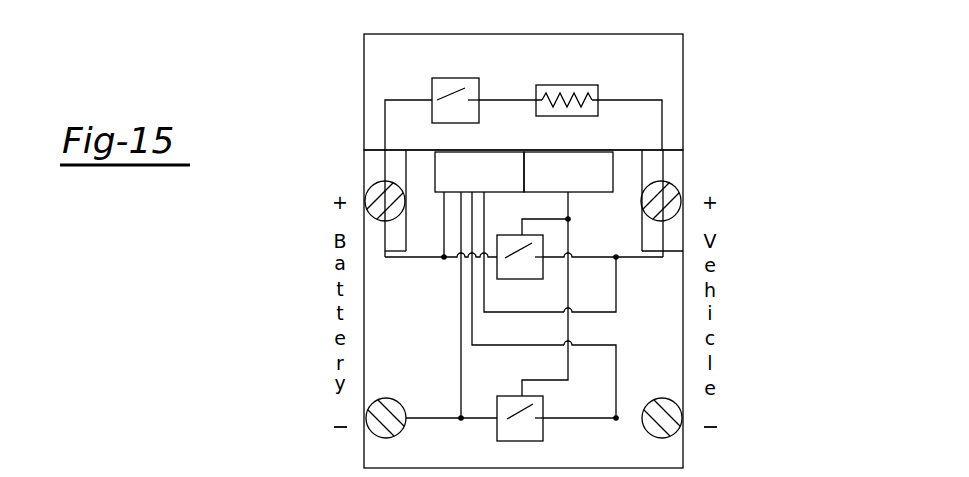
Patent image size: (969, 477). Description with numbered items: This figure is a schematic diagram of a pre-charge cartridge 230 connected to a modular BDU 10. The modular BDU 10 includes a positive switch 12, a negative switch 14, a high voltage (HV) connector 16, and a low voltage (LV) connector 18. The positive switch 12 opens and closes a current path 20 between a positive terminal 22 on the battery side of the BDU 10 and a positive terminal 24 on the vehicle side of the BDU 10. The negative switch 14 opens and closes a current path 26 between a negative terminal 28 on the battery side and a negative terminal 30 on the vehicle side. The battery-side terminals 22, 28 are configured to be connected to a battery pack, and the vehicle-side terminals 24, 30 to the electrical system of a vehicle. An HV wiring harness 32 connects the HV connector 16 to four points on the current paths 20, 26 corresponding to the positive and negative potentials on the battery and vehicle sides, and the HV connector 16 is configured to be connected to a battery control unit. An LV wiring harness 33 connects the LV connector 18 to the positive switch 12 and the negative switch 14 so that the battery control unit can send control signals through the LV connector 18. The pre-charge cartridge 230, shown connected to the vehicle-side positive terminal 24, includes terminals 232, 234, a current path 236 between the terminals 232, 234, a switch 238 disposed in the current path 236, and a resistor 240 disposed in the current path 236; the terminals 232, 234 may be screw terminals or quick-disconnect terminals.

The modular BDU 10 is at (333, 154).
The positive switch 12 is at (512, 280).
The negative switch 14 is at (497, 427).
The high voltage (HV) connector 16 is at (435, 168).
The low voltage (LV) connector 18 is at (613, 168).
The current path 20 is at (386, 242).
The positive terminal 22 is at (392, 217).
The positive terminal 24 is at (658, 215).
The current path 26 is at (435, 418).
The negative terminal 28 is at (370, 425).
The negative terminal 30 is at (673, 428).
The high voltage (HV) wiring harness 32 is at (365, 153).
The low voltage (LV) wiring harness 33 is at (687, 157).
The pre-charge cartridge 230 is at (703, 31).
The terminal 232 is at (431, 197).
The terminal 234 is at (616, 197).
The current path 236 is at (385, 107).
The switch 238 is at (432, 88).
The resistor 240 is at (598, 92).